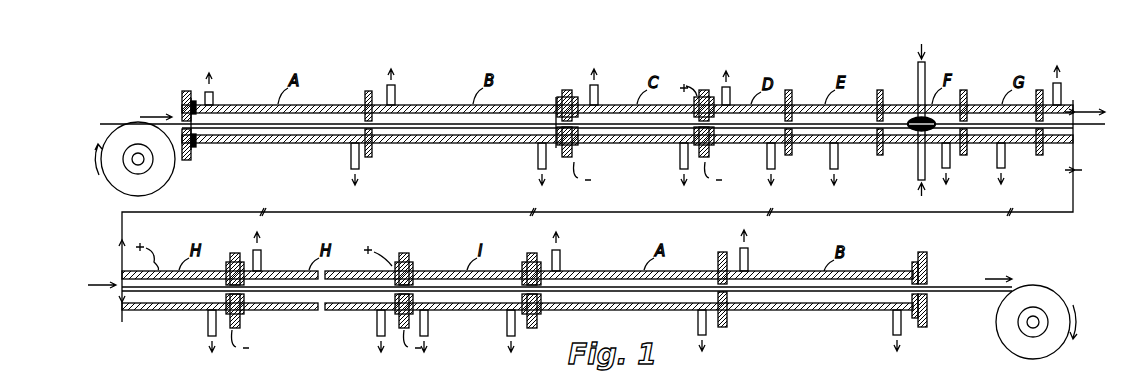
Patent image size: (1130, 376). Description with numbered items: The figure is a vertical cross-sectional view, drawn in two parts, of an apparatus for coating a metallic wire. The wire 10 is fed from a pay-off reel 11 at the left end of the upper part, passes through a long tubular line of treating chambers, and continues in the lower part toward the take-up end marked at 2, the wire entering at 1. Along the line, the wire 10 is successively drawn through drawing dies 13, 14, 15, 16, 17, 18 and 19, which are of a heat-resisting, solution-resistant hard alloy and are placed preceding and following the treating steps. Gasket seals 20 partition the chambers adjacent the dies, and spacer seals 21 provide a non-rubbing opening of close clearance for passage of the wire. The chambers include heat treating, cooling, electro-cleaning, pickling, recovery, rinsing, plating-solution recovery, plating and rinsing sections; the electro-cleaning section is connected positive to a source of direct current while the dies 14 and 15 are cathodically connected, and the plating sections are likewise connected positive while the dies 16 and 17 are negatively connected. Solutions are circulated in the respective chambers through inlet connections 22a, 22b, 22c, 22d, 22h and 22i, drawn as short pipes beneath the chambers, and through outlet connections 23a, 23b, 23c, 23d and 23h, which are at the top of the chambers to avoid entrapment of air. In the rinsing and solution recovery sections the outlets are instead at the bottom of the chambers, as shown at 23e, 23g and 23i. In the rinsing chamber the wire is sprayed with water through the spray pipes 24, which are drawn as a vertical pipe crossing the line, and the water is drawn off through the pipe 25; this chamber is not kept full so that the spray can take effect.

The wire 1 is at (118, 124).
The take-up reel 2 is at (1062, 296).
The wire 10 is at (312, 112).
The pay-off reel 11 is at (113, 190).
The drawing die 13 is at (184, 90).
The drawing die 14 is at (567, 90).
The drawing die 15 is at (705, 90).
The drawing die 16 is at (236, 252).
The drawing die 17 is at (404, 252).
The drawing die 18 is at (532, 252).
The drawing die 19 is at (923, 251).
The gasket seal 20 is at (196, 95).
The spacer seal 21 is at (370, 90).
The inlet connection 22a is at (351, 164).
The inlet connection 22b is at (538, 165).
The inlet connection 22c is at (680, 166).
The inlet connection 22d is at (767, 172).
The inlet connection 22h is at (208, 332).
The inlet connection 22i is at (489, 334).
The outlet connection 23a is at (216, 98).
The outlet connection 23b is at (398, 93).
The outlet connection 23c is at (602, 92).
The outlet connection 23d is at (732, 90).
The outlet connection 23e is at (838, 170).
The outlet connection 23g is at (1005, 170).
The outlet connection 23h is at (1064, 92).
The outlet connection 23i is at (428, 320).
The spray pipe 24 is at (916, 72).
The pipe 25 is at (950, 170).